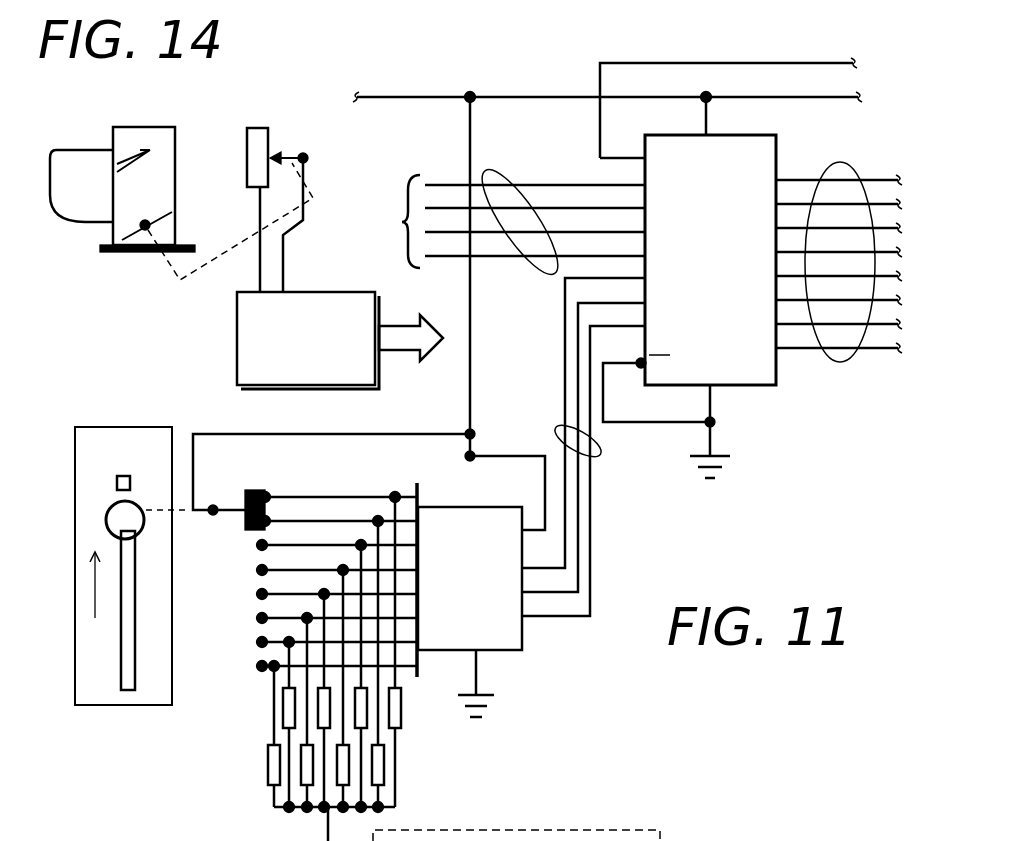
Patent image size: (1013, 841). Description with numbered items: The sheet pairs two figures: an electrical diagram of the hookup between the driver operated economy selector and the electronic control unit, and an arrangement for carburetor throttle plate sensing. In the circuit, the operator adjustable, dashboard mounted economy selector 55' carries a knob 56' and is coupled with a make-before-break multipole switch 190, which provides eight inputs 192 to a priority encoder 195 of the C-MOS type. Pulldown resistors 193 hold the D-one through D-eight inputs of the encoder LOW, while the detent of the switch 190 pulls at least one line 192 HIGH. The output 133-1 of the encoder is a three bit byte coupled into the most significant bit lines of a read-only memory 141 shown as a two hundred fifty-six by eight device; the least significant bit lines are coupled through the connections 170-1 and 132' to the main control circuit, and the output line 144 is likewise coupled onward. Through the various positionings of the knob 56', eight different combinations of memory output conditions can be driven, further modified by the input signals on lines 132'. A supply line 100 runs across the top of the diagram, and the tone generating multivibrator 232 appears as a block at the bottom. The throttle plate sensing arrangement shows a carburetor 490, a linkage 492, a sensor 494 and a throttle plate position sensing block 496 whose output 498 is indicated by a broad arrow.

In FIG. 14, the carburetor 490 is at (175, 142).
In FIG. 14, the throttle linkage 492 is at (193, 285).
In FIG. 14, the throttle position sensor 494 is at (270, 140).
In FIG. 14, the throttle plate position sensing circuit 496 is at (345, 305).
In FIG. 14, the sensing output 498 is at (396, 345).
In FIG. 14, the economy selector 55' is at (132, 540).
In FIG. 14, the knob 56' is at (161, 548).
In FIG. 11, the supply line 100 is at (484, 95).
In FIG. 11, the line 170-1 is at (864, 56).
In FIG. 11, the memory 141 is at (745, 162).
In FIG. 11, the input signal lines 132' is at (523, 208).
In FIG. 11, the output line 144 is at (851, 172).
In FIG. 11, the encoder output 133-1 is at (594, 451).
In FIG. 11, the make-before-break multipole switch 190 is at (244, 497).
In FIG. 11, the inputs 192 is at (331, 486).
In FIG. 11, the priority encoder 195 is at (462, 520).
In FIG. 11, the pulldown resistors 193 is at (419, 715).
In FIG. 11, the tone generating multivibrator 232 is at (593, 822).